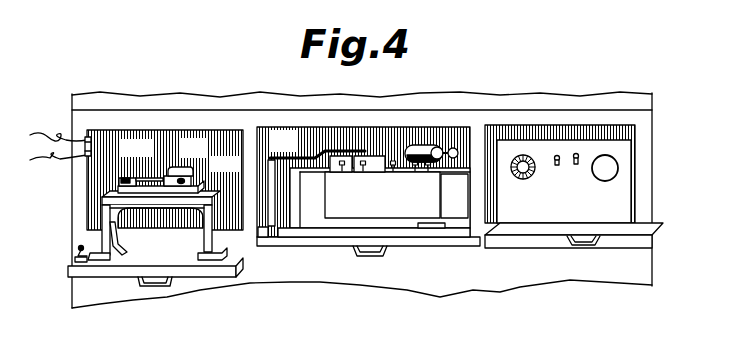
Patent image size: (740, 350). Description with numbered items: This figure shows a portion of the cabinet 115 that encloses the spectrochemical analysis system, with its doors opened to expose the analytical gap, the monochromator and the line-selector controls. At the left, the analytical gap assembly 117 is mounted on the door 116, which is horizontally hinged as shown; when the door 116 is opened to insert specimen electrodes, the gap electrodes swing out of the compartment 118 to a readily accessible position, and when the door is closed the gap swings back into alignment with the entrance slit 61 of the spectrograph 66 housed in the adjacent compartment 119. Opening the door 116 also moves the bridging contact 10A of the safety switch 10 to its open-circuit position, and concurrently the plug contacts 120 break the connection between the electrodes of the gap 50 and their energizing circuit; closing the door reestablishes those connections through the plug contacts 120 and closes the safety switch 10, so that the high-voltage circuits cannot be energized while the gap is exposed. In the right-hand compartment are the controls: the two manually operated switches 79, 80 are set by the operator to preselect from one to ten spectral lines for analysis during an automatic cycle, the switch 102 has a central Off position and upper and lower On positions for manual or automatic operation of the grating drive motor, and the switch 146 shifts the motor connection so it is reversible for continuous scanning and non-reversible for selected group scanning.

The safety switch 10 is at (88, 140).
The bridging contact 10A is at (79, 247).
The compartment 118 is at (100, 131).
The plug contacts 120 is at (125, 177).
The gap 50 is at (206, 156).
The analytical gap assembly 117 is at (208, 186).
The door 116 is at (180, 273).
The adjacent compartment 119 is at (295, 150).
The spectrograph 66 is at (383, 207).
The entrance slit 61 is at (272, 213).
The switch 102 is at (575, 153).
The manually operated switch 79 is at (524, 179).
The switch 146 is at (557, 165).
The manually operated switch 80 is at (611, 178).
The cabinet 115 is at (647, 192).